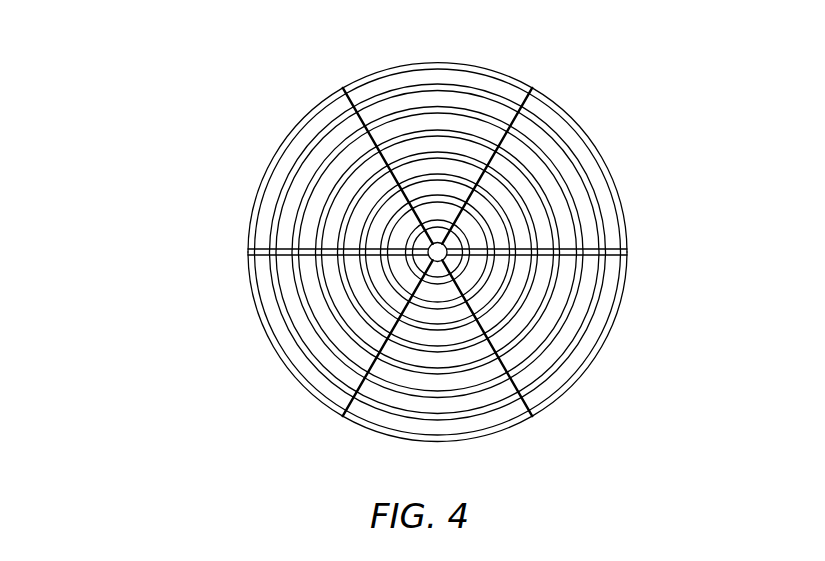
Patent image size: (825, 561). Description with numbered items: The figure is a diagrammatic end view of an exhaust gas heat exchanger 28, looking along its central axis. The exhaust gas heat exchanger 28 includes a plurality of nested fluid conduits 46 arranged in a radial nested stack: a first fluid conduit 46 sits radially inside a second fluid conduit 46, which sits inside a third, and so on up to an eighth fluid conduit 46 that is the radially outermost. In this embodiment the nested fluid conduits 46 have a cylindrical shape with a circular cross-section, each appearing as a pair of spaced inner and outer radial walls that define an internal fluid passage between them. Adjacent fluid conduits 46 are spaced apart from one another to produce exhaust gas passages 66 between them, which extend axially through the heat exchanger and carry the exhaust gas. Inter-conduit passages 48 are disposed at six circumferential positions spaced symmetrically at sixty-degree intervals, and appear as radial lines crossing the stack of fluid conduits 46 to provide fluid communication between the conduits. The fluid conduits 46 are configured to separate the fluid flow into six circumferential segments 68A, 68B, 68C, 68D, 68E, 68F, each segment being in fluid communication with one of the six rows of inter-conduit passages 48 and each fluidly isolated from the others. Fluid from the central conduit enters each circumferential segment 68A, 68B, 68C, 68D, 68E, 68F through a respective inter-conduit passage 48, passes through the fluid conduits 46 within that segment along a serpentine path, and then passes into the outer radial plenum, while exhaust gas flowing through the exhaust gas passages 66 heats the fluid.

The exhaust gas heat exchanger 28 is at (452, 256).
The nested fluid conduits 46 is at (472, 256).
The inter-conduit passages 48 is at (344, 93).
The exhaust gas passages 66 is at (333, 400).
The circumferential segment 68A is at (447, 62).
The circumferential segment 68B is at (272, 152).
The circumferential segment 68C is at (272, 345).
The circumferential segment 68D is at (442, 443).
The circumferential segment 68E is at (557, 403).
The circumferential segment 68F is at (567, 108).